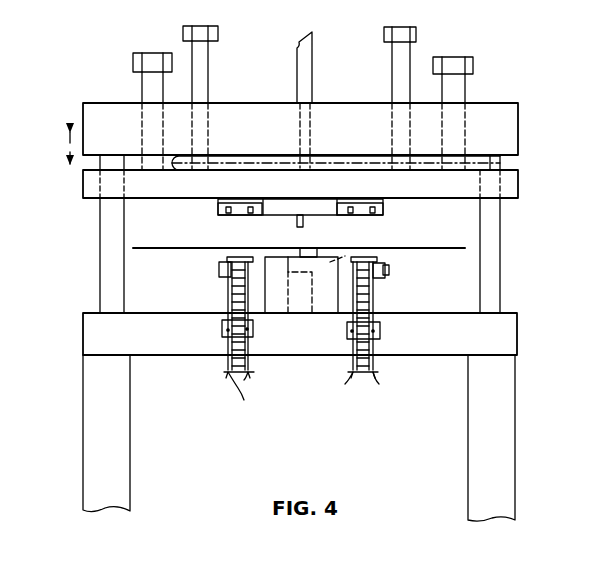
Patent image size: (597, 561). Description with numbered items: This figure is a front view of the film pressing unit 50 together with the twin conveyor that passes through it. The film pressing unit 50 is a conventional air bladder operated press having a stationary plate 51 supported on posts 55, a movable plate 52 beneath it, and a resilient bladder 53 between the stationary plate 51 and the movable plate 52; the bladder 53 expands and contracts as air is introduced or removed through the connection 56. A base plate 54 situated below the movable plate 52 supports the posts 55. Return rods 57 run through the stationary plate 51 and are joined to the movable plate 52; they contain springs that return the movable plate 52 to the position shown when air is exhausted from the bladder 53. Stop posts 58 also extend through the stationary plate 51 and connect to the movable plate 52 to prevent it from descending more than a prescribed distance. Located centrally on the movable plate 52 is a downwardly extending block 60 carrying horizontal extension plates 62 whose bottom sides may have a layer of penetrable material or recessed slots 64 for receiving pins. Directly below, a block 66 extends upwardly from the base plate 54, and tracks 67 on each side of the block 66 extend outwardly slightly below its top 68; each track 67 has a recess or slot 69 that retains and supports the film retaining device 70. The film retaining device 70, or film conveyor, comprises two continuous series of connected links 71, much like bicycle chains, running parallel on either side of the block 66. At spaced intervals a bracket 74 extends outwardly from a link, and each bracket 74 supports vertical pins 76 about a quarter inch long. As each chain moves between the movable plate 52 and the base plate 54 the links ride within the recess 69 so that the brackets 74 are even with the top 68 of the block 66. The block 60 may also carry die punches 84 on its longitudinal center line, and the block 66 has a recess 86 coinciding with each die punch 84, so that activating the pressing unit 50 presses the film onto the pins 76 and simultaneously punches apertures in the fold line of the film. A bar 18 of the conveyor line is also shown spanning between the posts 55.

The conveyor bar 18 is at (150, 248).
The film pressing unit 50 is at (88, 63).
The stationary plate 51 is at (83, 115).
The movable plate 52 is at (83, 180).
The resilient bladder 53 is at (500, 165).
The base plate 54 is at (83, 330).
The posts 55 is at (100, 222).
The connection 56 is at (312, 62).
The return rods 57 is at (208, 60).
The stop posts 58 is at (148, 92).
The block 60 is at (295, 208).
The horizontal extension plates 62 is at (218, 205).
The recessed slots 64 is at (250, 216).
The block 66 is at (276, 302).
The tracks 67 is at (218, 268).
The top 68 is at (302, 260).
The recess or slot 69 is at (389, 270).
The film retaining device 70 is at (215, 384).
The connected links 71 is at (230, 345).
The bracket 74 is at (222, 324).
The pins 76 is at (242, 379).
The die punches 84 is at (297, 222).
The recess 86 is at (323, 262).